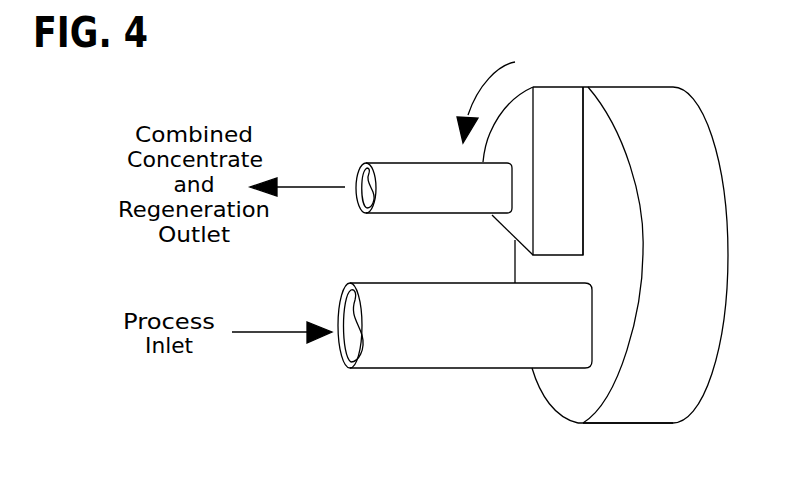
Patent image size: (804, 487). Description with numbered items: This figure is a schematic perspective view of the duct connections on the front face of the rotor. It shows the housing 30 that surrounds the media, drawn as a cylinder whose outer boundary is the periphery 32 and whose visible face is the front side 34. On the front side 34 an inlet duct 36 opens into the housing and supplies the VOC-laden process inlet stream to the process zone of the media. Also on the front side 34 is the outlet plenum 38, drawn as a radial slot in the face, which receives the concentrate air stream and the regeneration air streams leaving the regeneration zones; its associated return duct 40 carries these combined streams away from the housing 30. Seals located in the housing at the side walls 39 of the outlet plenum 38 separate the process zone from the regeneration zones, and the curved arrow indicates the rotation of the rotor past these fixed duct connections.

The housing 30 is at (703, 395).
The periphery 32 is at (640, 410).
The front side 34 is at (565, 397).
The inlet duct 36 is at (387, 358).
The outlet plenum 38 is at (520, 105).
The side walls 39 is at (572, 102).
The return duct 40 is at (408, 203).